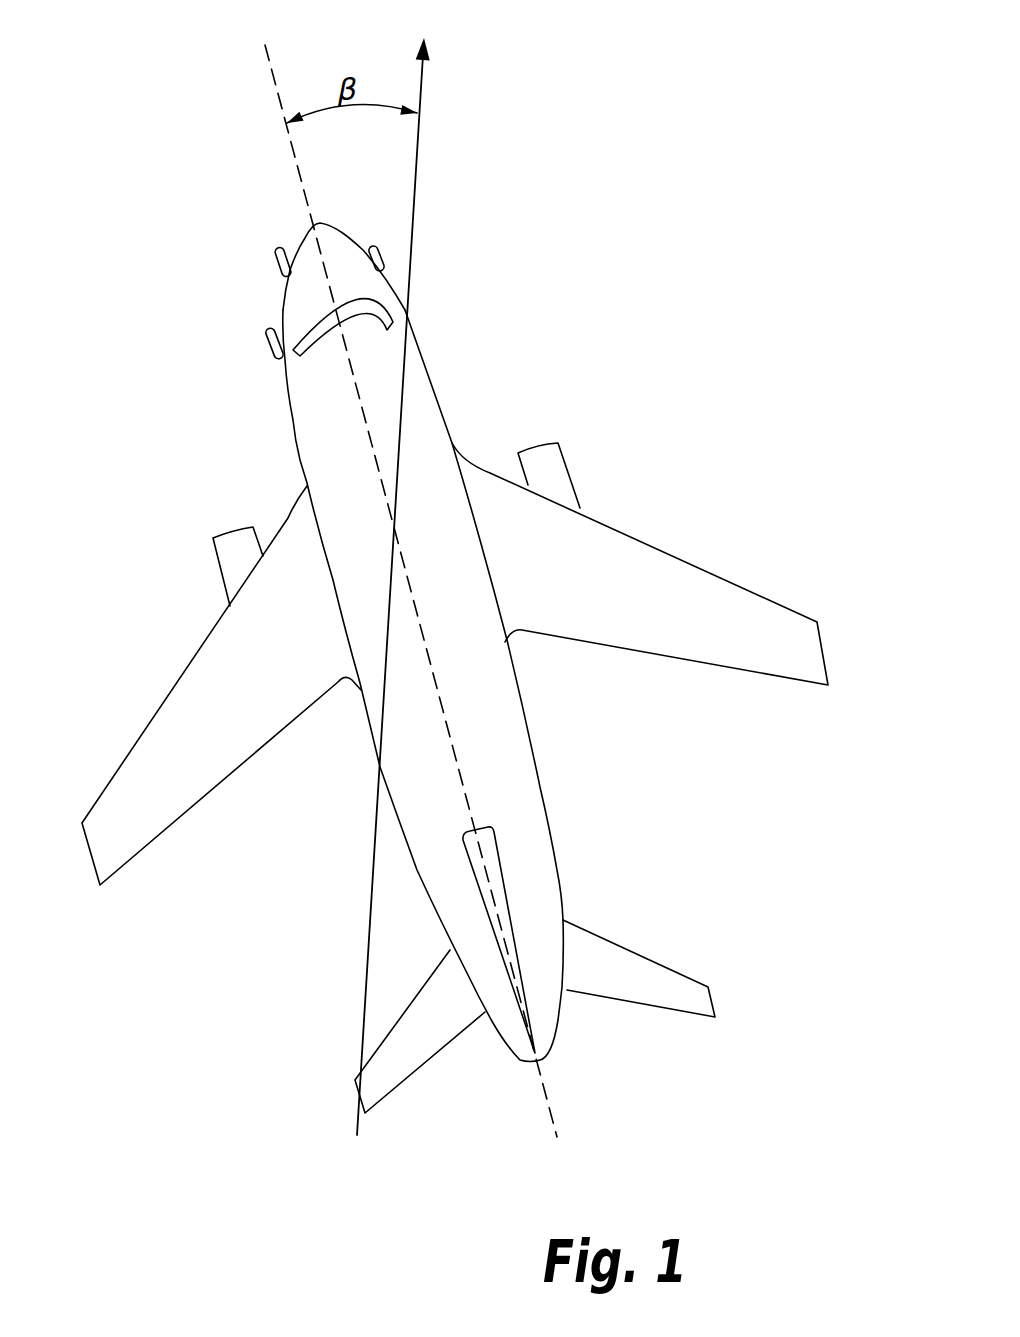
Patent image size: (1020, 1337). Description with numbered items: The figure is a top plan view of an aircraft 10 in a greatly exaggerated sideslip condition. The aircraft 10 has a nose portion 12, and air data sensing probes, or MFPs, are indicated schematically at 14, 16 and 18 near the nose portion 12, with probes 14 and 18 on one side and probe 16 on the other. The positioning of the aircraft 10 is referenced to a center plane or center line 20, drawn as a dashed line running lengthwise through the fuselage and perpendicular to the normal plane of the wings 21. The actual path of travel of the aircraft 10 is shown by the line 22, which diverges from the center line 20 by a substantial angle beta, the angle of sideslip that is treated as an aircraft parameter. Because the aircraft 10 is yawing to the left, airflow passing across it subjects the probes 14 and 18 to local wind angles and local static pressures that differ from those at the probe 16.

The aircraft 10 is at (455, 636).
The nose portion 12 is at (308, 243).
The air data sensing probe 14 is at (278, 262).
The air data sensing probe 16 is at (377, 247).
The air data sensing probe 18 is at (268, 340).
The center line 20 is at (448, 726).
The wings 21 is at (203, 682).
The path of travel line 22 is at (418, 177).